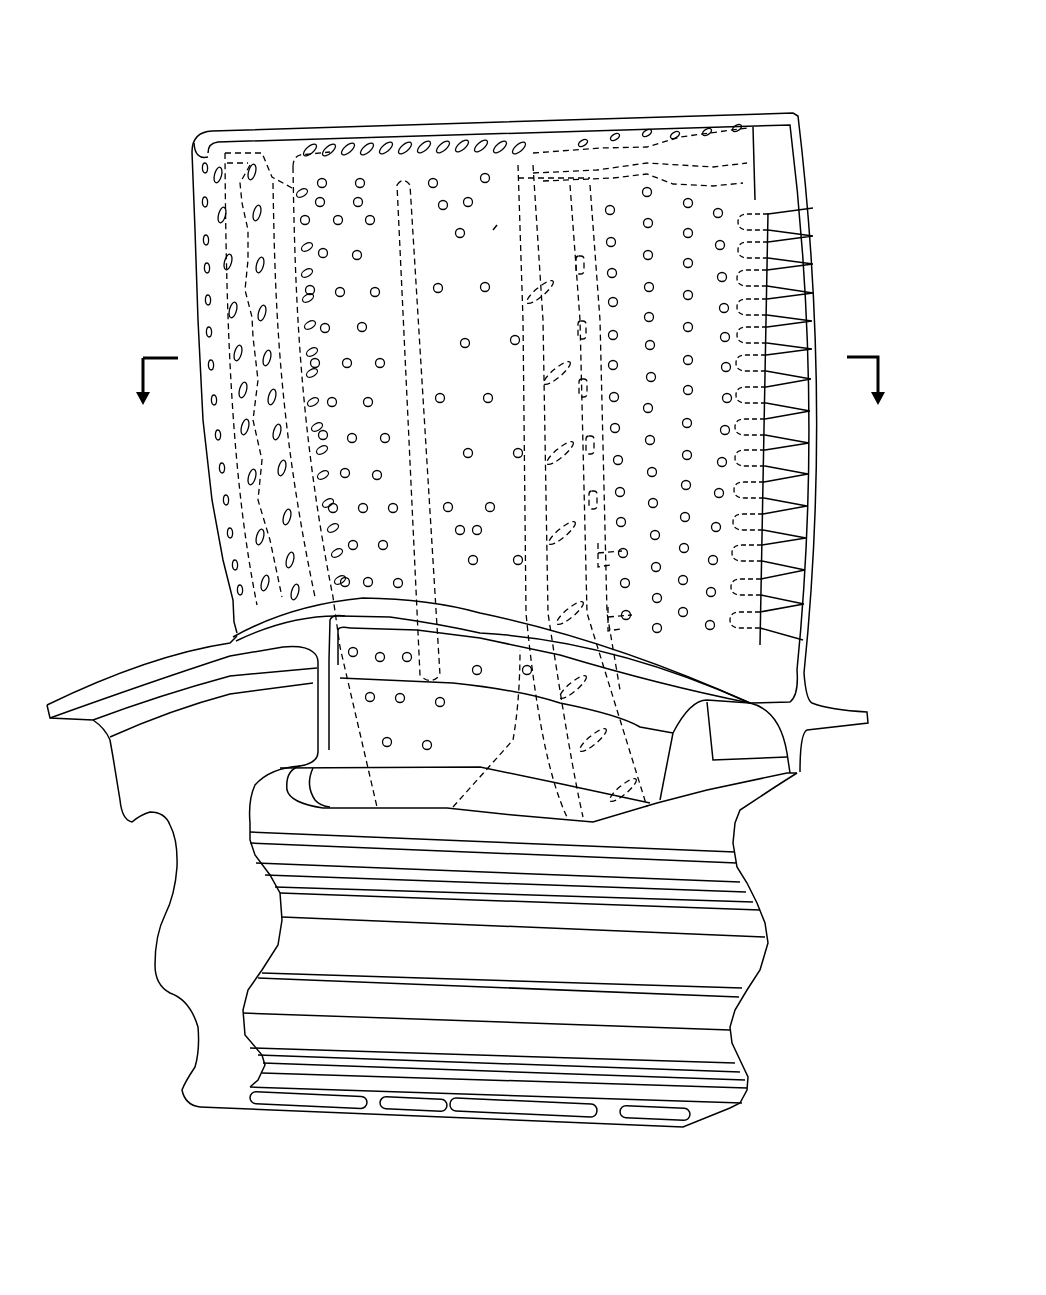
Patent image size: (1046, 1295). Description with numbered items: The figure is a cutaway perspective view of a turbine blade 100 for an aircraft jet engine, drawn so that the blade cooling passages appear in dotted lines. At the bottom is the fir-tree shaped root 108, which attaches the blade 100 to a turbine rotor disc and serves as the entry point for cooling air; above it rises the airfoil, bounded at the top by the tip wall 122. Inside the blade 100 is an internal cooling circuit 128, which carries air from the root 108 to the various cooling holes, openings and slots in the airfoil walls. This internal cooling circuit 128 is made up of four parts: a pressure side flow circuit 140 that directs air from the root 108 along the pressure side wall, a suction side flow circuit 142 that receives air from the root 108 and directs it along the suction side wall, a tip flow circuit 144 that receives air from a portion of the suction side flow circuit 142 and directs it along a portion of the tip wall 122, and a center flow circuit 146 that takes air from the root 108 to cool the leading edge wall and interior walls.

The turbine blade 100 is at (745, 82).
The root 108 is at (160, 935).
The tip wall 122 is at (258, 136).
The internal cooling circuit 128 is at (383, 147).
The pressure side flow circuit 140 is at (499, 222).
The suction side flow circuit 142 is at (747, 199).
The tip flow circuit 144 is at (684, 144).
The center flow circuit 146 is at (223, 256).